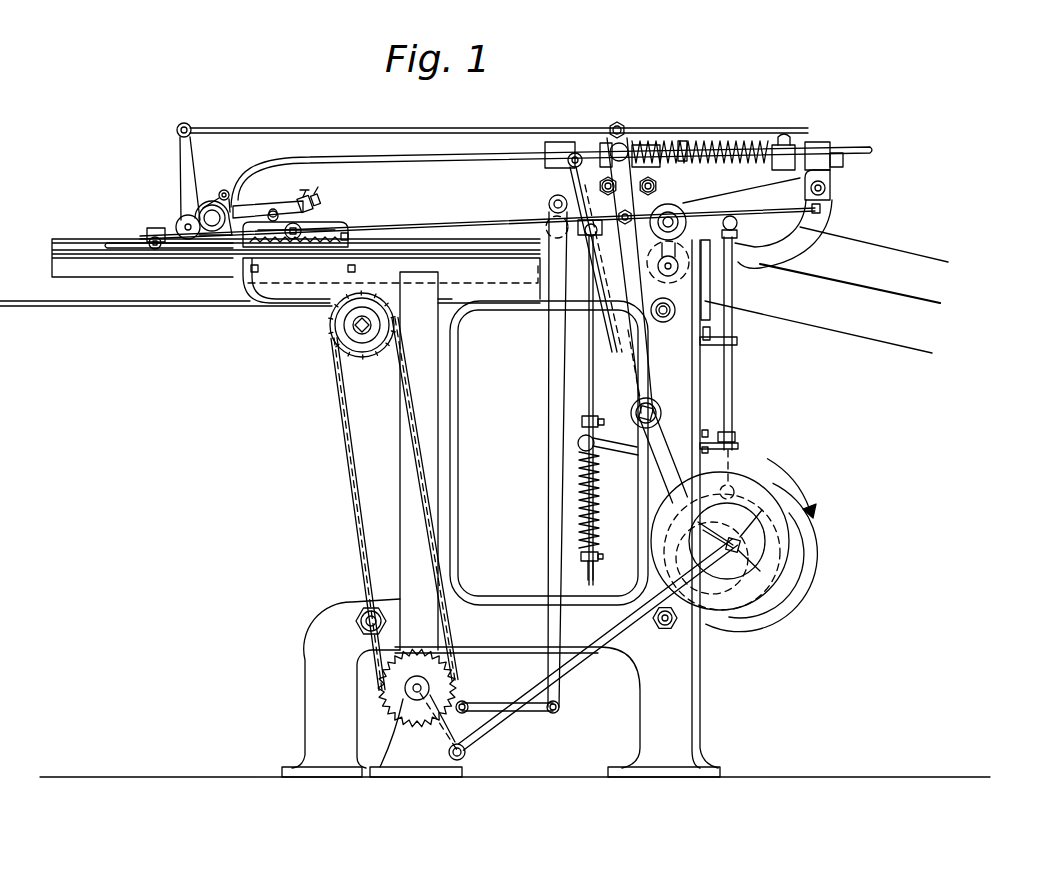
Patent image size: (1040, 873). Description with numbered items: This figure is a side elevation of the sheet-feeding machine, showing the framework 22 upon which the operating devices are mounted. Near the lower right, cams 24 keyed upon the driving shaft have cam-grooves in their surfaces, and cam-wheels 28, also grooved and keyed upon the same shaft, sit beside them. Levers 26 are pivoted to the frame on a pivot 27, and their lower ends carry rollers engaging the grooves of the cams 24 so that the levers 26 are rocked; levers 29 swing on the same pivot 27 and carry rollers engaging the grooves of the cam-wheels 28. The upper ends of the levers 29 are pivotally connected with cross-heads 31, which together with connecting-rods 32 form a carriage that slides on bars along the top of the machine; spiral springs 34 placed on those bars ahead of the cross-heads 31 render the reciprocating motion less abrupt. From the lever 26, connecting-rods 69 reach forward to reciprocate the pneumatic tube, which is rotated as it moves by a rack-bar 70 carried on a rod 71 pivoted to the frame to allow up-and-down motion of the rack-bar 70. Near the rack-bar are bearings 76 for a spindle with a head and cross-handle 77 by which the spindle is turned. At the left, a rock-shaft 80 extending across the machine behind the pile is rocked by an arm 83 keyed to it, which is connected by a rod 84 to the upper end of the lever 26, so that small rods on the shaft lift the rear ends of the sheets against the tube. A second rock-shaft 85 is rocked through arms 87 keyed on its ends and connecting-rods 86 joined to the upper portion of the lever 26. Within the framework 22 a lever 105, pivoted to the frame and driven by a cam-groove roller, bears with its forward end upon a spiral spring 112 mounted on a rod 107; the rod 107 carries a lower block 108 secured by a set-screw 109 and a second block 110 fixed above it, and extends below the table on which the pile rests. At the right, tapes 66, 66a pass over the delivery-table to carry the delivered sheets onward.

The framework 22 is at (452, 405).
The cams 24 is at (722, 552).
The levers 26 is at (647, 345).
The pivot 27 is at (663, 403).
The cam-wheels 28 is at (810, 560).
The levers 29 is at (617, 338).
The cross-heads 31 is at (643, 143).
The connecting-rods 32 is at (656, 186).
The spiral springs 34 is at (715, 145).
The tapes 66 is at (893, 252).
The tapes 66a is at (789, 357).
The connecting-rods 69 is at (445, 224).
The rack-bar 70 is at (318, 246).
The rod 71 is at (178, 243).
The bearings 76 is at (304, 198).
The head and cross-handle 77 is at (319, 198).
The rock-shaft 80 is at (181, 224).
The arm 83 is at (182, 170).
The rod 84 is at (309, 128).
The rock-shaft 85 is at (214, 220).
The connecting-rods 86 is at (397, 154).
The arms 87 is at (220, 198).
The lever 105 is at (628, 452).
The rod 107 is at (588, 347).
The block 108 is at (594, 564).
The set-screw 109 is at (599, 556).
The second block 110 is at (582, 422).
The spiral spring 112 is at (595, 503).